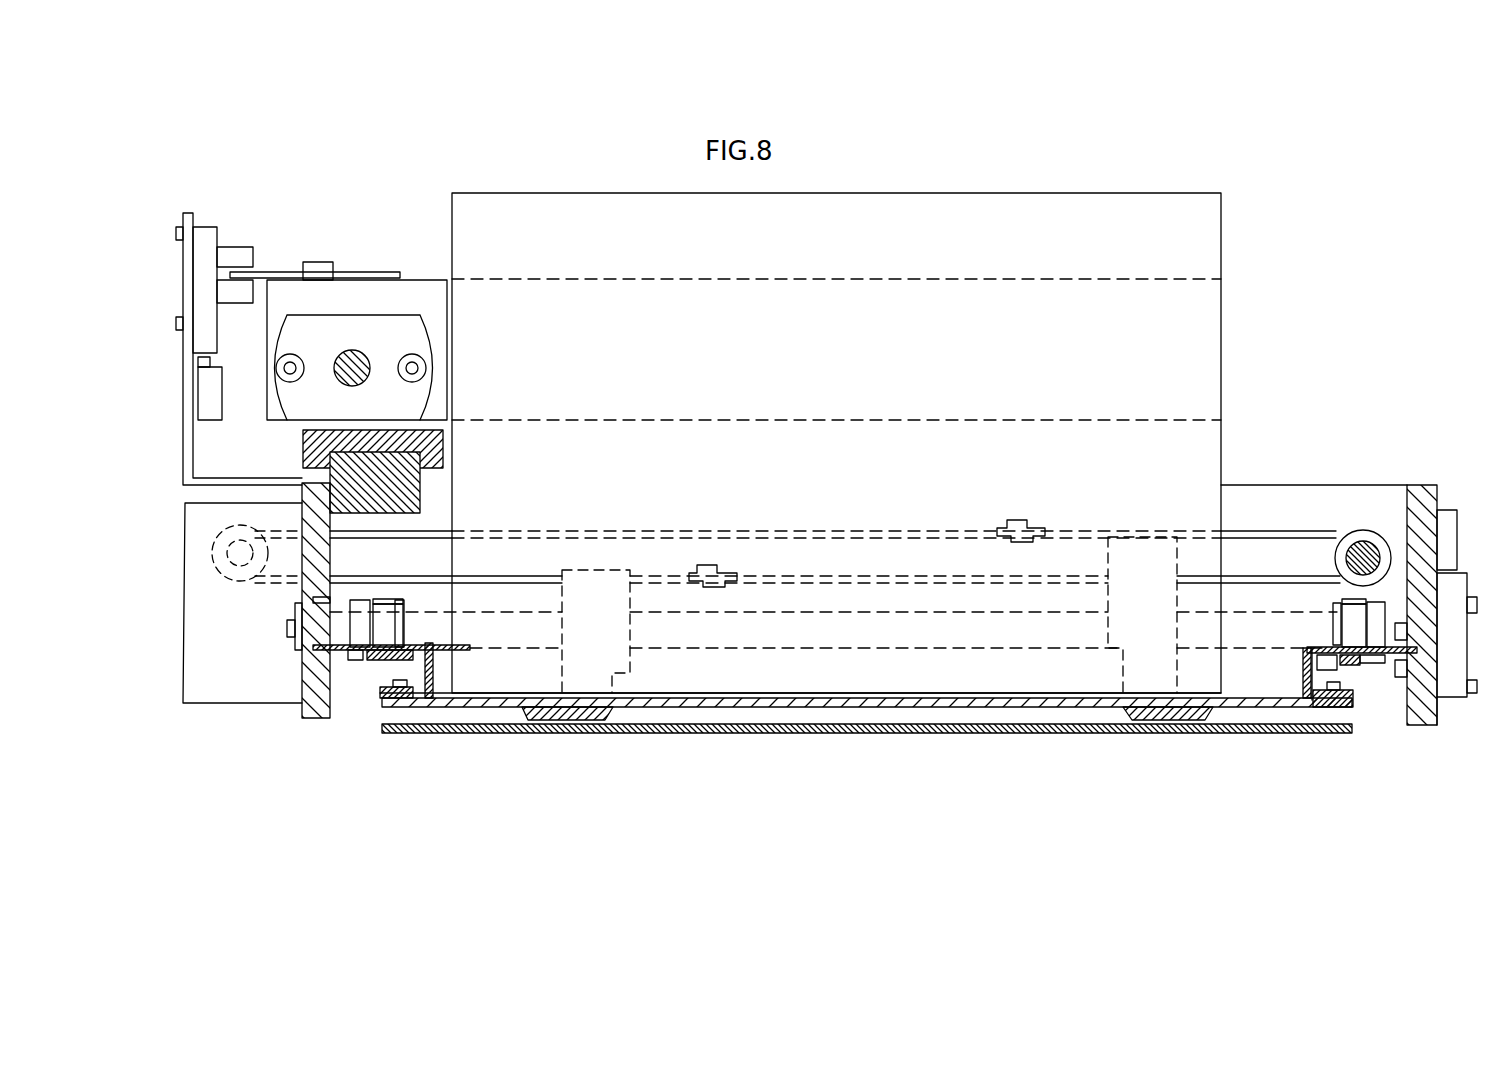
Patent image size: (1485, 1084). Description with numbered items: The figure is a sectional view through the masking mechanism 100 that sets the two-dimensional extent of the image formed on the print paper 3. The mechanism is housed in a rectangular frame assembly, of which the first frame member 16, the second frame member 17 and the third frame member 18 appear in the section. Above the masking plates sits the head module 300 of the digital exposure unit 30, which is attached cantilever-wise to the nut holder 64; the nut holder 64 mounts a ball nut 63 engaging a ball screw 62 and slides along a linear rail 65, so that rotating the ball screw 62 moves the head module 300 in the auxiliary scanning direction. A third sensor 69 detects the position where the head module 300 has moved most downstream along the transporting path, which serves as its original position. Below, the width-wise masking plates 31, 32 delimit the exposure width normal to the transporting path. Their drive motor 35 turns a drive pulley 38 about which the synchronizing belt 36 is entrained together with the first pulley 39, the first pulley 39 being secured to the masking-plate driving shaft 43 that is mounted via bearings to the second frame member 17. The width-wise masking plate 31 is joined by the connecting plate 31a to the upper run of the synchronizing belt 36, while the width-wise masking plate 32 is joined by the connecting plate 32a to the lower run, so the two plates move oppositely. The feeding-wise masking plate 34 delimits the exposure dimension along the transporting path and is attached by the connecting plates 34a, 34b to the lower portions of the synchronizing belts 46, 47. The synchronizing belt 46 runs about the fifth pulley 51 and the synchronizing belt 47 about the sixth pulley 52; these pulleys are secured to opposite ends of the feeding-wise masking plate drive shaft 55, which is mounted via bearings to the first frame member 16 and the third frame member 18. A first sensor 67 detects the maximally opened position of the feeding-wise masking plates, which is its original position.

The masking mechanism 100 is at (1283, 178).
The head module 300 is at (1148, 210).
The digital exposure unit 30 is at (1240, 260).
The third sensor 69 is at (258, 278).
The ball nut 63 is at (357, 313).
The ball screw 62 is at (350, 350).
The nut holder 64 is at (448, 442).
The linear rail 65 is at (420, 478).
The third frame member 18 is at (303, 675).
The drive motor 35 is at (212, 690).
The drive pulley 38 is at (240, 581).
The synchronizing belt 36 is at (1275, 530).
The synchronizing belt 46 is at (385, 604).
The fifth pulley 51 is at (357, 604).
The connecting plate 32a is at (652, 570).
The width-wise masking plate 32 is at (578, 720).
The connecting plate 31a is at (1108, 540).
The width-wise masking plate 31 is at (1172, 720).
The feeding-wise masking plate 34 is at (1042, 707).
The connecting plate 34a is at (1390, 680).
The connecting plate 34b is at (335, 655).
The print paper 3 is at (970, 733).
The feeding-wise masking plate drive shaft 55 is at (832, 650).
The second frame member 17 is at (1243, 490).
The first frame member 16 is at (1423, 490).
The masking-plate driving shaft 43 is at (1358, 532).
The first pulley 39 is at (1388, 532).
The synchronizing belt 47 is at (1345, 600).
The sixth pulley 52 is at (1290, 670).
The first sensor 67 is at (1418, 728).